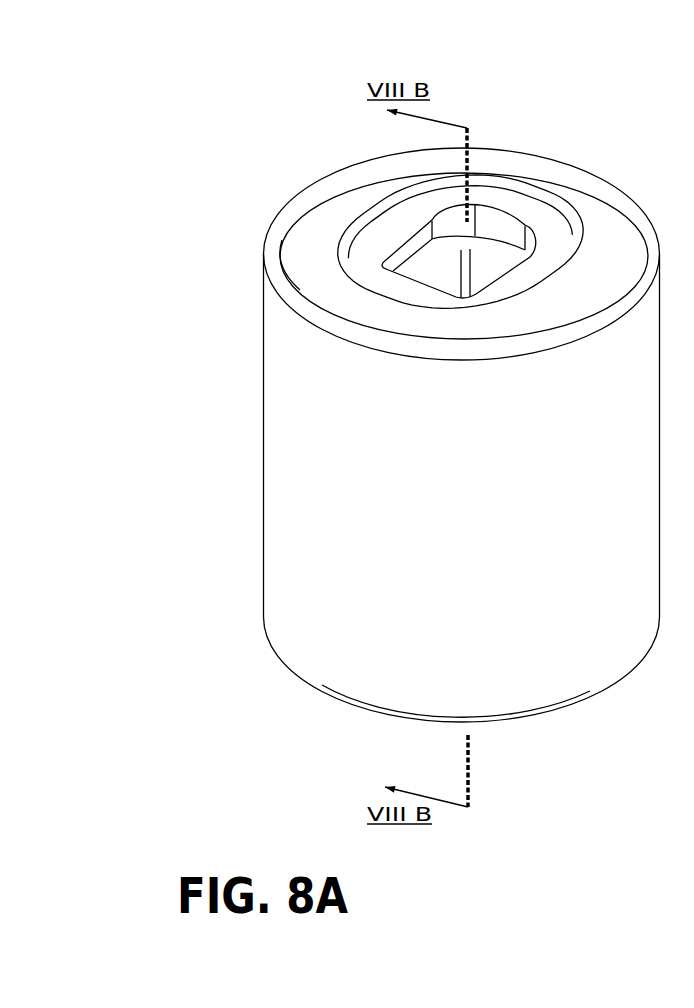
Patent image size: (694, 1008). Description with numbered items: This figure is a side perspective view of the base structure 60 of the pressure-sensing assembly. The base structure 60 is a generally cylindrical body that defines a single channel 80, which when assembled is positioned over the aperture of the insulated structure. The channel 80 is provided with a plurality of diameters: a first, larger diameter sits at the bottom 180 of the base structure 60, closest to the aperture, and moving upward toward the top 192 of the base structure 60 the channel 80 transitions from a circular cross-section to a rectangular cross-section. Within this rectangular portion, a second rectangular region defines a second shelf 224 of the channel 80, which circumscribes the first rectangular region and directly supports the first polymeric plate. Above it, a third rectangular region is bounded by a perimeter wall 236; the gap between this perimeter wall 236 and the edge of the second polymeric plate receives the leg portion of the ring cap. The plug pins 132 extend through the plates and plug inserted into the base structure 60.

The base structure 60 is at (533, 97).
The channel 80 is at (488, 250).
The plug pins 132 is at (558, 235).
The top 192 is at (310, 230).
The second shelf 224 is at (447, 250).
The perimeter wall 236 is at (357, 233).
The bottom 180 is at (375, 713).